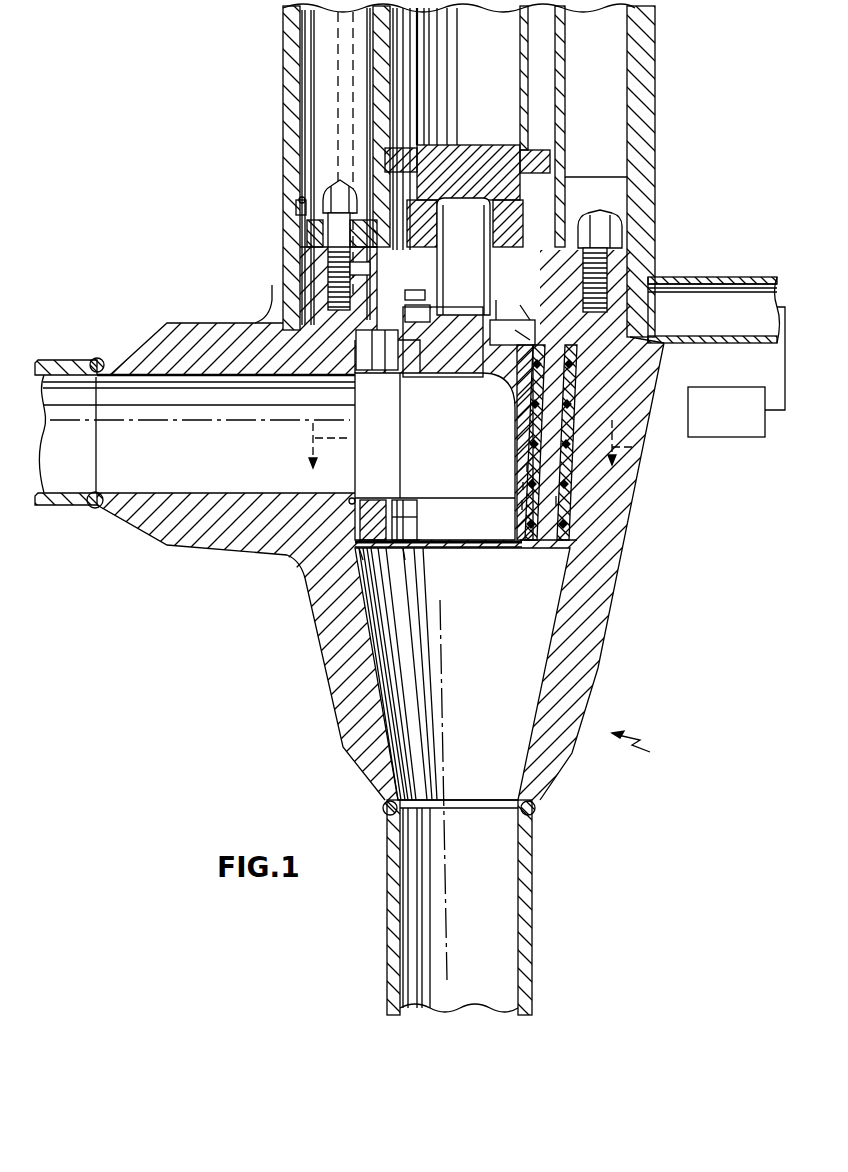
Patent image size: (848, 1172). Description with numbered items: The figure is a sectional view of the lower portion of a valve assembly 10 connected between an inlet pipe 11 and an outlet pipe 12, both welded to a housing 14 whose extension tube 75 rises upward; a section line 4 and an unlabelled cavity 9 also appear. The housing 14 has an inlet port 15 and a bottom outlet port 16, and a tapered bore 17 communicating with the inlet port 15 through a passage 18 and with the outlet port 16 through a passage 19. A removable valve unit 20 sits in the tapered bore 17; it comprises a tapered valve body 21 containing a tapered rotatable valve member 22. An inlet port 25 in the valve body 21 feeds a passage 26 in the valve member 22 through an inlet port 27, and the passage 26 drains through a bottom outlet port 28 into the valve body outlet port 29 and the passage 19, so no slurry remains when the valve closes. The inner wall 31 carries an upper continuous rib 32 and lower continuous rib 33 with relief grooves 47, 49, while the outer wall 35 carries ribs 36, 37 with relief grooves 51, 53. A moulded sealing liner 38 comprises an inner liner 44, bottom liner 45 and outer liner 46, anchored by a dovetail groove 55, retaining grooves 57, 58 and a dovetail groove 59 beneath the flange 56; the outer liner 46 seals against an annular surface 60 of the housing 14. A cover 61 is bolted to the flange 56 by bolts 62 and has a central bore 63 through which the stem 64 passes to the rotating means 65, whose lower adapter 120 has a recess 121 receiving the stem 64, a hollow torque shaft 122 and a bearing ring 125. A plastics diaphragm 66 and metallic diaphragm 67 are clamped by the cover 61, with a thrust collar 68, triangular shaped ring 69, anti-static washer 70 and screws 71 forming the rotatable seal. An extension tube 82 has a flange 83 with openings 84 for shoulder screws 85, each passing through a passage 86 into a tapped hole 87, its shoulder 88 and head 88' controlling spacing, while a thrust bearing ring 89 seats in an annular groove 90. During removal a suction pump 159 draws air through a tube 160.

The cavity 9 is at (617, 130).
The valve assembly 10 is at (649, 750).
The inlet pipe 11 is at (58, 362).
The outlet pipe 12 is at (533, 906).
The housing 14 is at (597, 668).
The inlet port 15 is at (80, 507).
The outlet port 16 is at (410, 812).
The tapered bore 17 is at (578, 401).
The passage 18 is at (200, 487).
The passage 19 is at (393, 750).
The removable valve unit 20 is at (572, 485).
The tapered valve body 21 is at (558, 512).
The tapered rotatable valve member 22 is at (527, 469).
The inlet port 25 is at (387, 375).
The passage 26 is at (459, 452).
The inlet port 27 is at (410, 500).
The outlet port 28 is at (420, 517).
The outlet port 29 is at (410, 562).
The inner wall 31 is at (521, 488).
The upper continuous rib 32 is at (400, 343).
The lower continuous rib 33 is at (422, 542).
The tapered outer wall 35 is at (562, 500).
The upper continuous rib 36 is at (306, 397).
The lower continuous rib 37 is at (348, 500).
The sealing liner 38 is at (526, 438).
The inner liner 44 is at (522, 505).
The bottom liner 45 is at (548, 556).
The outer liner 46 is at (570, 477).
The groove 47 is at (405, 377).
The groove 49 is at (417, 508).
The groove 51 is at (352, 397).
The groove 53 is at (363, 502).
The dovetail groove 55 is at (371, 556).
The outwardly extending flange 56 is at (653, 290).
The retaining groove 57 is at (416, 320).
The retaining groove 58 is at (356, 335).
The dovetail groove 59 is at (592, 337).
The annular surface 60 is at (760, 307).
The cover 61 is at (622, 270).
The bolts 62 is at (606, 213).
The central bore 63 is at (506, 264).
The stem 64 is at (438, 206).
The rotating means 65 is at (408, 96).
The plastics diaphragm 66 is at (540, 350).
The metallic diaphragm 67 is at (527, 327).
The thrust collar 68 is at (522, 312).
The triangular shaped ring 69 is at (500, 337).
The anti-static washer 70 is at (497, 316).
The screws 71 is at (410, 298).
The extension tube 75 is at (650, 98).
The extension tube 82 is at (373, 48).
The flange 83 is at (308, 232).
The openings 84 is at (300, 210).
The shoulder screws 85 is at (337, 183).
The passage 86 is at (325, 277).
The tapped hole 87 is at (300, 298).
The shoulder 88 is at (295, 261).
The head 88' is at (273, 189).
The thrust bearing ring 89 is at (365, 268).
The annular groove 90 is at (366, 242).
The lower adapter 120 is at (466, 146).
The recess 121 is at (462, 205).
The hollow torque shaft 122 is at (545, 90).
The bearing ring 125 is at (392, 148).
The suction pump 159 is at (718, 387).
The tube 160 is at (740, 277).
The section line 4- 4 is at (462, 444).